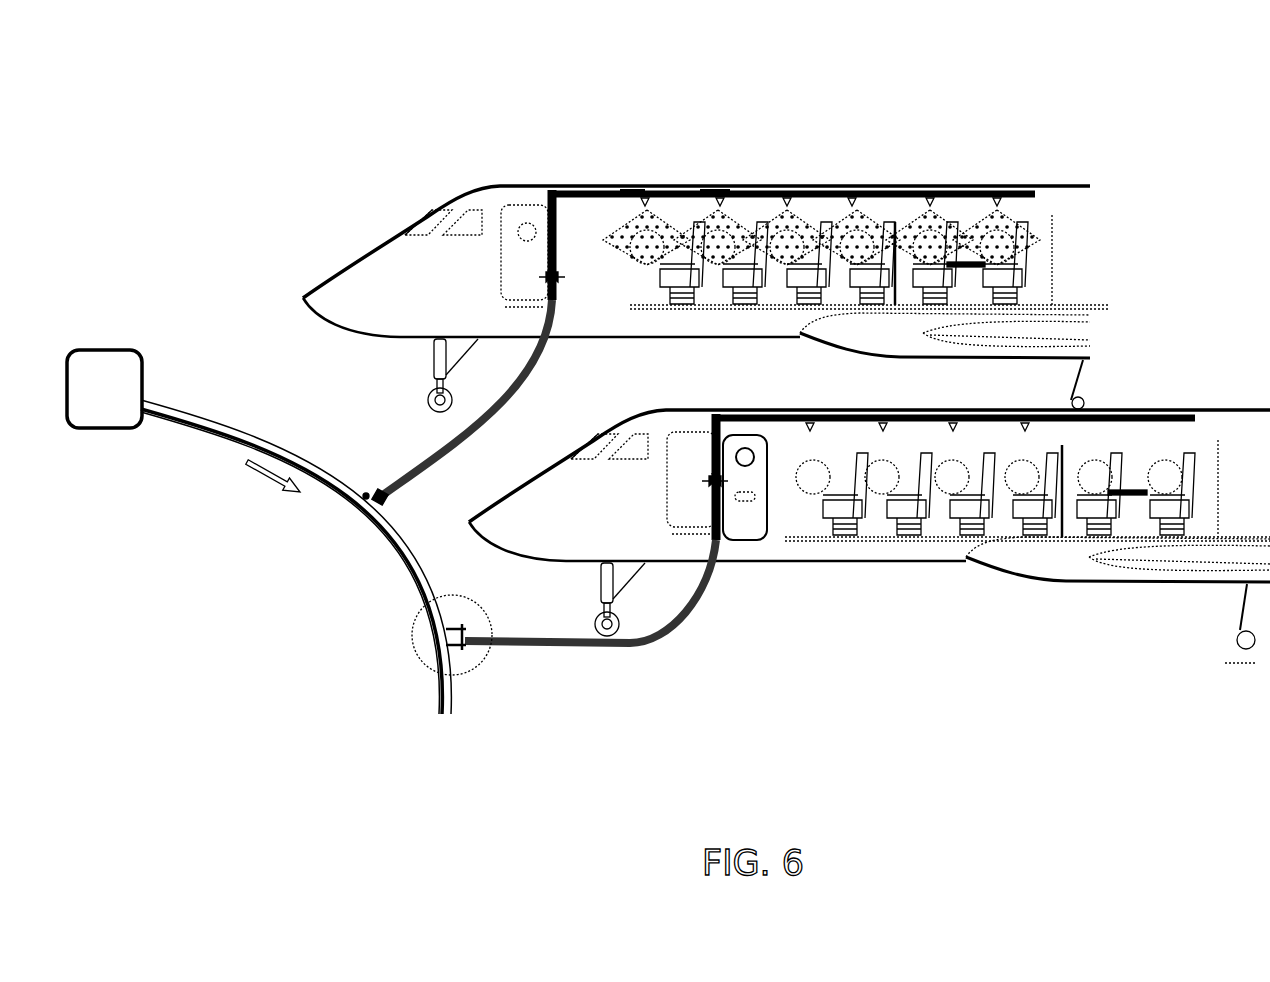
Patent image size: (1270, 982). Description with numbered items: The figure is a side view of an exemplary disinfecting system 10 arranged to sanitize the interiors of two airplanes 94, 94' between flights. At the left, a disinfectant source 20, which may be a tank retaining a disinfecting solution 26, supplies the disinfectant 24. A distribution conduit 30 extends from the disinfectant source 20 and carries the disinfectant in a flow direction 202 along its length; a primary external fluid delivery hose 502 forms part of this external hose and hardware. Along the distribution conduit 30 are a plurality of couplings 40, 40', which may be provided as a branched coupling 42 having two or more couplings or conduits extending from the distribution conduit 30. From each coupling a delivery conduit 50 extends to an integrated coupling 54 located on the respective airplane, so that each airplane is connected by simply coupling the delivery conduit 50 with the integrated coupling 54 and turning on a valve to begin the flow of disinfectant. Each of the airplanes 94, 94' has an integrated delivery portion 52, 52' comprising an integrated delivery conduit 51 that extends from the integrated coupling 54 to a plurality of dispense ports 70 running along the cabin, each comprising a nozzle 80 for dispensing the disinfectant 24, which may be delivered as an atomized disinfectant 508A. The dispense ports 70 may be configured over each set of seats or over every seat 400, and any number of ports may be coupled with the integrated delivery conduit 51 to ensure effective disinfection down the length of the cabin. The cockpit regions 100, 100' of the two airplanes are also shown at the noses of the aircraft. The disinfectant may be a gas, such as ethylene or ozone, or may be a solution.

The disinfecting system 10 is at (400, 110).
The disinfectant source 20 is at (95, 408).
The disinfectant 24 is at (998, 200).
The disinfecting solution 26 is at (92, 382).
The distribution conduit 30 is at (237, 423).
The coupling 40 is at (393, 469).
The coupling 40' is at (422, 633).
The branched coupling 42 is at (366, 497).
The delivery conduit 50 is at (488, 415).
The integrated delivery conduit 51 is at (716, 190).
The integrated delivery portion 52 is at (793, 201).
The integrated delivery portion 52' is at (955, 446).
The integrated coupling 54 is at (558, 280).
The dispense port 70 is at (620, 230).
The nozzle 80 is at (938, 192).
The airplane 94 is at (706, 261).
The airplane 94' is at (869, 510).
The cockpit 100 is at (437, 192).
The cockpit 100' is at (591, 441).
The flow direction 202 is at (257, 480).
The seat 400 is at (857, 527).
The primary external fluid delivery hose 502 is at (312, 470).
The atomized disinfectant 508A is at (632, 192).